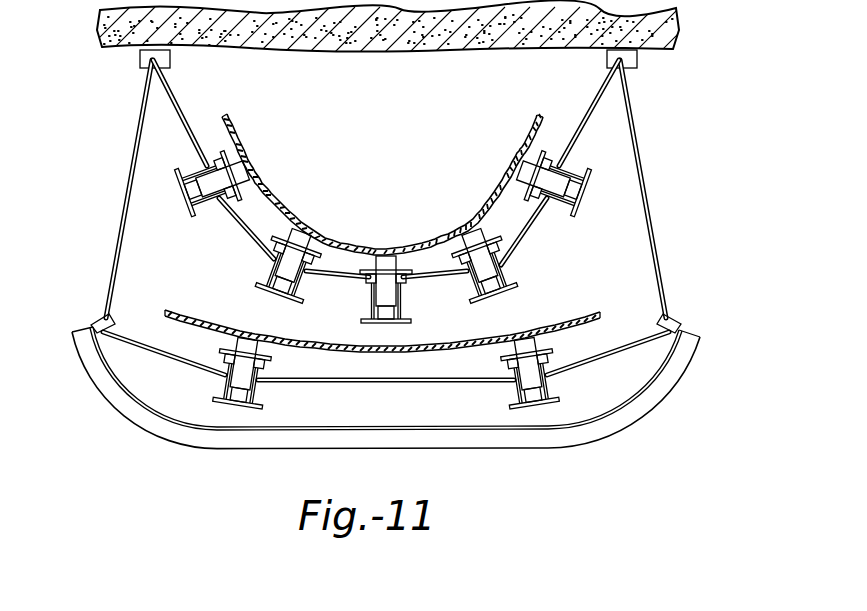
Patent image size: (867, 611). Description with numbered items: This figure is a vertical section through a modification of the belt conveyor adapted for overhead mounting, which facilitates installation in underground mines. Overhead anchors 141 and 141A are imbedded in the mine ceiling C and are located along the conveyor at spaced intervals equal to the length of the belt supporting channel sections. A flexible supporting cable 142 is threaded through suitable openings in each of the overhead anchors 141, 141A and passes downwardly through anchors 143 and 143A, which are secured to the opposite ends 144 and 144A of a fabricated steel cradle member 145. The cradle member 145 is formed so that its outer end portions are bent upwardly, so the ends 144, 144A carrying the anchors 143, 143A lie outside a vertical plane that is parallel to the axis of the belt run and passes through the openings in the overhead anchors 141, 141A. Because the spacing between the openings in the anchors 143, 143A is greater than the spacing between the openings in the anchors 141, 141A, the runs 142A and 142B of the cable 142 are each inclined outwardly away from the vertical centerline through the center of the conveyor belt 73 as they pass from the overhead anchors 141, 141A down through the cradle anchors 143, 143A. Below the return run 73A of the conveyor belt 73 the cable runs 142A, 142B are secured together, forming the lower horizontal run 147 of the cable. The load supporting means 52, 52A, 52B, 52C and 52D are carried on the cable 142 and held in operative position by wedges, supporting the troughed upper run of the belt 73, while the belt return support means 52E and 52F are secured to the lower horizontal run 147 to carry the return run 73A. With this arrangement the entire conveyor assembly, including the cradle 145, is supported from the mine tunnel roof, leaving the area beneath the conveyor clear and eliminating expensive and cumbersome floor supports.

The mine ceiling C is at (327, 52).
The overhead anchor 141 is at (146, 61).
The overhead anchor 141A is at (638, 62).
The flexible supporting cable 142 is at (180, 109).
The cable run 142A is at (130, 187).
The cable run 142B is at (650, 192).
The anchor 143 is at (99, 322).
The anchor 143A is at (675, 322).
The end of cradle member 144 is at (78, 338).
The end of cradle member 144A is at (697, 341).
The cradle member 145 is at (247, 441).
The lower horizontal run of cable 147 is at (400, 382).
The load supporting means 52 is at (414, 323).
The load supporting means 52A is at (519, 282).
The load supporting means 52B is at (578, 218).
The load supporting means 52C is at (270, 293).
The load supporting means 52D is at (194, 217).
The belt return support means 52E is at (565, 389).
The belt return support means 52F is at (266, 409).
The conveyor belt 73 is at (281, 207).
The return run of conveyor belt 73A is at (598, 321).